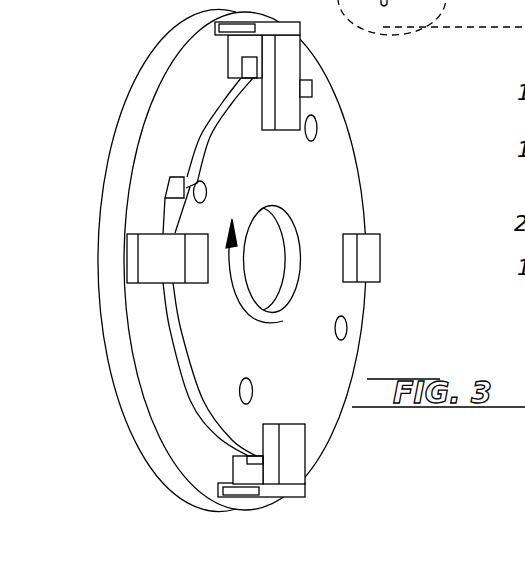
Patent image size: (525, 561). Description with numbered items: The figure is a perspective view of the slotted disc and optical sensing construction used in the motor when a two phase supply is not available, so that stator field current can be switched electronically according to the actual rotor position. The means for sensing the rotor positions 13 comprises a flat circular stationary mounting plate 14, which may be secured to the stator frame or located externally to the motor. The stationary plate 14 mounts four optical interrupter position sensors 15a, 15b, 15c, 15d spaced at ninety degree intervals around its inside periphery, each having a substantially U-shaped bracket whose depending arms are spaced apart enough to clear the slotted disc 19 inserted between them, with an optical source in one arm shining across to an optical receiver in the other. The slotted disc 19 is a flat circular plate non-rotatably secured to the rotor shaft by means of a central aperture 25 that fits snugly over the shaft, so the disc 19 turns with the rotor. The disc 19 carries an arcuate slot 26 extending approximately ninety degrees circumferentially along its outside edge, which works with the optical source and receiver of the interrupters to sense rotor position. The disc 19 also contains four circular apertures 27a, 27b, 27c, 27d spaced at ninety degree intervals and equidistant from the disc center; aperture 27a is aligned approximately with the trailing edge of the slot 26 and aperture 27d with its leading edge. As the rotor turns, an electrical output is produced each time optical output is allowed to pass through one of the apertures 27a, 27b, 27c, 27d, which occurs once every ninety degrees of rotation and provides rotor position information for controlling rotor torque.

The means for sensing the rotor positions 13 is at (243, 261).
The stationary mounting plate 14 is at (115, 173).
The slotted disc 19 is at (358, 160).
The arcuate slot 26 is at (196, 145).
The central aperture 25 is at (287, 287).
The circular aperture 27a is at (316, 126).
The circular aperture 27b is at (347, 328).
The circular aperture 27c is at (240, 396).
The circular aperture 27d is at (193, 197).
The optical interrupter position sensor 15a is at (287, 53).
The optical interrupter position sensor 15b is at (375, 257).
The optical interrupter position sensor 15c is at (293, 467).
The optical interrupter position sensor 15d is at (148, 262).